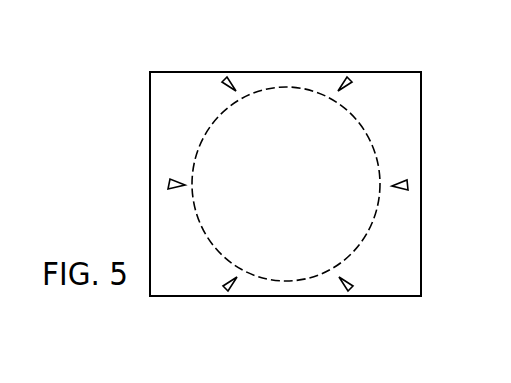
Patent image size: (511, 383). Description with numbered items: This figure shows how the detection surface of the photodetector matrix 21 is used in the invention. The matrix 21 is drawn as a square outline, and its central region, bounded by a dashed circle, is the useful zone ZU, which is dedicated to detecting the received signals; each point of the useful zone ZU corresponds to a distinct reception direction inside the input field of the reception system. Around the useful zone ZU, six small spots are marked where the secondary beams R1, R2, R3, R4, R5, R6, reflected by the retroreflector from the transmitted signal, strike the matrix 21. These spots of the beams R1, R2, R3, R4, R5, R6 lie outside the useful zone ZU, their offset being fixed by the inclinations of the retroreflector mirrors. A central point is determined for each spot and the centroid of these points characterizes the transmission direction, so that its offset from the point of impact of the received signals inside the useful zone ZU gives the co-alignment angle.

The photodetector matrix 21 is at (150, 102).
The useful zone ZU is at (376, 146).
The secondary beam R1 is at (349, 79).
The secondary beam R2 is at (407, 185).
The secondary beam R3 is at (350, 289).
The secondary beam R4 is at (226, 289).
The secondary beam R5 is at (169, 185).
The secondary beam R6 is at (225, 79).